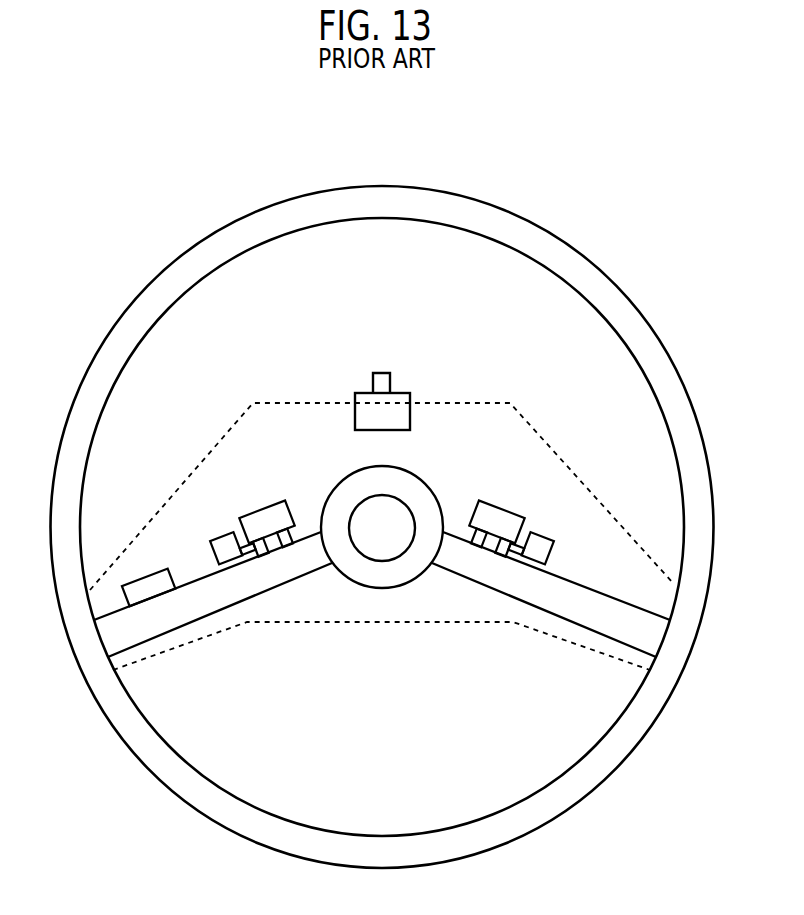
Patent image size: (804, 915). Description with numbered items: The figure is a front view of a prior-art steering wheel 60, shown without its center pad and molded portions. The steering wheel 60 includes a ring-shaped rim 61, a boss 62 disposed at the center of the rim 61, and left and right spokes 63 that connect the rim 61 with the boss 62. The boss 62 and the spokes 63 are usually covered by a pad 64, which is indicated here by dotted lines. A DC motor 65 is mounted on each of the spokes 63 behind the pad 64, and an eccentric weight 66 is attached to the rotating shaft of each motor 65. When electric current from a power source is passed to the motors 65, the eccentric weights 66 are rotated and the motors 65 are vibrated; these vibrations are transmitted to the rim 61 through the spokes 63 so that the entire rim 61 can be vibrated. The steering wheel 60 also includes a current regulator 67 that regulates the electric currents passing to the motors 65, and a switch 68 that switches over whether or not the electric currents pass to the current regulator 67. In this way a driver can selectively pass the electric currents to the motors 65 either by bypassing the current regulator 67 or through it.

The steering wheel 60 is at (202, 198).
The rim 61 is at (641, 310).
The boss 62 is at (390, 576).
The spokes 63 is at (212, 595).
The pad 64 is at (655, 597).
The DC motor 65 is at (254, 500).
The eccentric weight 66 is at (208, 542).
The current regulator 67 is at (147, 590).
The switch 68 is at (411, 413).